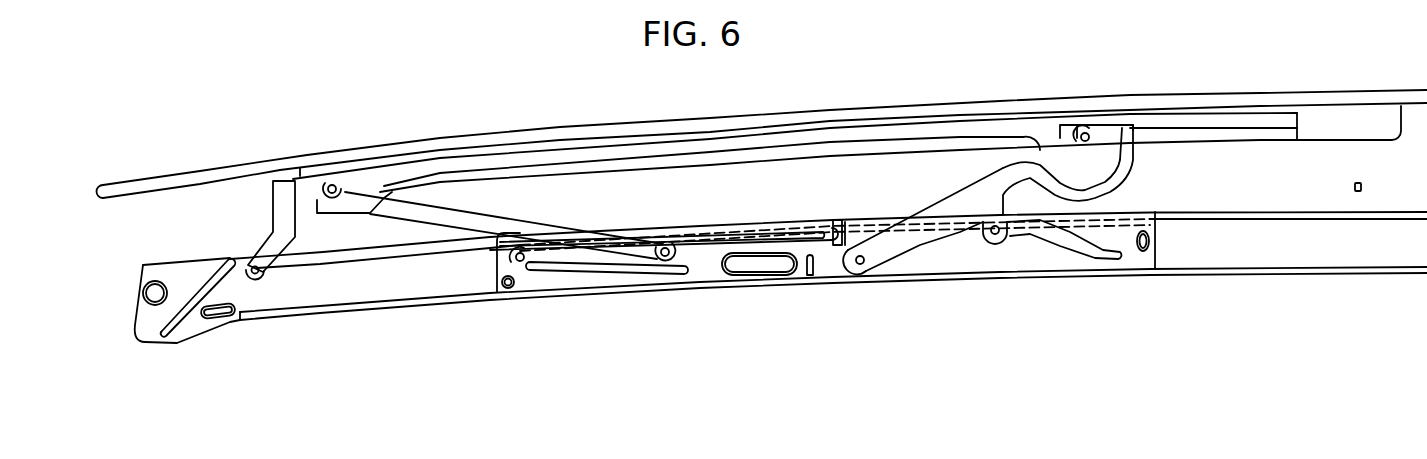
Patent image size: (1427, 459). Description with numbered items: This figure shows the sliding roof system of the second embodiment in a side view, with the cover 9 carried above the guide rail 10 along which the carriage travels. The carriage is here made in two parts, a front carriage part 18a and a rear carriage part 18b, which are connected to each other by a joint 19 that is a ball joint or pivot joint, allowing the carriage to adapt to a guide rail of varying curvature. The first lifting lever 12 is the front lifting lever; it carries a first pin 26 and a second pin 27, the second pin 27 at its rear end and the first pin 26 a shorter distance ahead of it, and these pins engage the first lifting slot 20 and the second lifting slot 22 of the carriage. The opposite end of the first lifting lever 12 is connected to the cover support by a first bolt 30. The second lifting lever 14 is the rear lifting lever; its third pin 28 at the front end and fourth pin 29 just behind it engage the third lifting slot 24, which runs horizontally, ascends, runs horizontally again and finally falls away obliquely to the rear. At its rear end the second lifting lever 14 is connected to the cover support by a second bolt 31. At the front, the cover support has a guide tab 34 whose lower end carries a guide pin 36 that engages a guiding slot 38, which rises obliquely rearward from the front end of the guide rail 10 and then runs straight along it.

The cover 9 is at (812, 118).
The guide rail 10 is at (1272, 250).
The first lifting lever 12 is at (437, 220).
The second lifting lever 14 is at (1118, 168).
The front carriage part 18a is at (578, 286).
The rear carriage part 18b is at (1060, 256).
The joint 19 is at (810, 277).
The first lifting slot 20 is at (647, 272).
The second lifting slot 22 is at (741, 242).
The third lifting slot 24 is at (928, 246).
The first pin 26 is at (521, 264).
The second pin 27 is at (667, 248).
The third pin 28 is at (862, 267).
The fourth pin 29 is at (997, 240).
The first bolt 30 is at (331, 184).
The second bolt 31 is at (1086, 132).
The guide tab 34 is at (272, 232).
The guide pin 36 is at (256, 277).
The guiding slot 38 is at (340, 270).